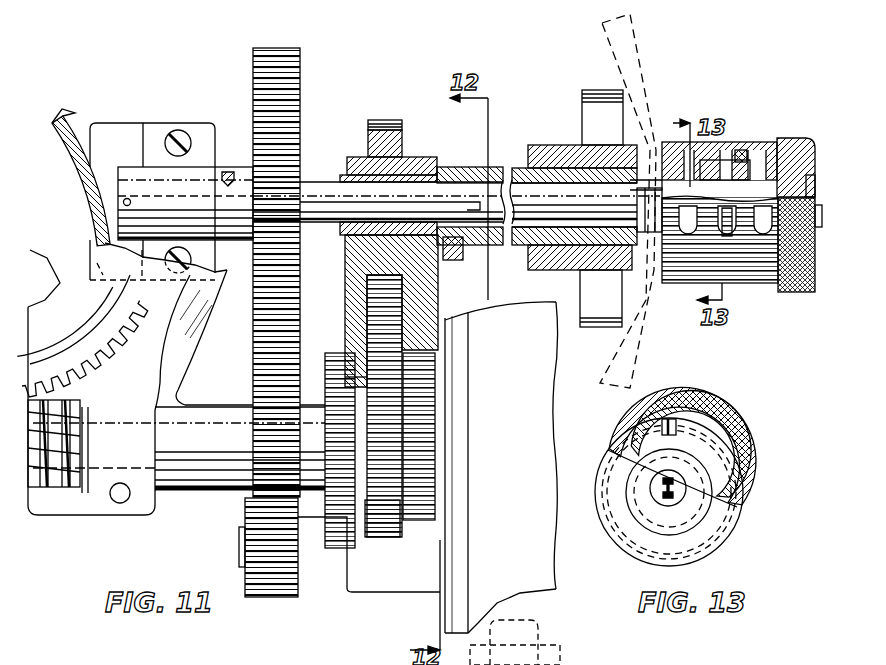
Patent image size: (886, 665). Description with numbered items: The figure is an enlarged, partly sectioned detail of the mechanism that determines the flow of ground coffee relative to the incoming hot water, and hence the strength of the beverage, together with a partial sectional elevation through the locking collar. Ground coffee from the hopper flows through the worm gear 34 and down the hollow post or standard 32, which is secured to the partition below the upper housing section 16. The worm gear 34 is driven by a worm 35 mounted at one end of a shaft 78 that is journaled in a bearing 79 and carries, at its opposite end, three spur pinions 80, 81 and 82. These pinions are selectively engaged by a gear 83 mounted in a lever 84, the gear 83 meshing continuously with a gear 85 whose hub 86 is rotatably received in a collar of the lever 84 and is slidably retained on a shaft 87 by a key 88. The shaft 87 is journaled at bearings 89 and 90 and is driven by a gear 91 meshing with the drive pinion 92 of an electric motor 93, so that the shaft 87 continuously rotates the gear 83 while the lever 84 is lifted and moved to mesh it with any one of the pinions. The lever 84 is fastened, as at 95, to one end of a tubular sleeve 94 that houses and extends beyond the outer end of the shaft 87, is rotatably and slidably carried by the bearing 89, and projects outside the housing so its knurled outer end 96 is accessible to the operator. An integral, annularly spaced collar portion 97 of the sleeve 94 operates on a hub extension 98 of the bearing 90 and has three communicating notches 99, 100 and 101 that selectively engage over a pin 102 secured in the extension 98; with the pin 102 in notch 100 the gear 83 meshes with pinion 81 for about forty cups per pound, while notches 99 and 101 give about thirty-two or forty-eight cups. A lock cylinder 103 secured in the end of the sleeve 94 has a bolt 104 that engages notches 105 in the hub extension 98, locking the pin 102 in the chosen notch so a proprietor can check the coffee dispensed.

In FIG. 11, the upper section of machine housing 16 is at (642, 58).
In FIG. 11, the hollow post or standard 32 is at (190, 346).
In FIG. 11, the worm gear 34 is at (102, 328).
In FIG. 11, the driving worm 35 is at (52, 500).
In FIG. 11, the shaft 78 is at (190, 420).
In FIG. 11, the bearing 79 is at (212, 492).
In FIG. 11, the spur pinion 80 is at (352, 546).
In FIG. 11, the spur pinion 81 is at (397, 538).
In FIG. 11, the spur pinion 82 is at (420, 522).
In FIG. 11, the gear 83 is at (385, 406).
In FIG. 11, the lever 84 is at (425, 296).
In FIG. 11, the gear 85 is at (404, 146).
In FIG. 11, the hub 86 is at (341, 177).
In FIG. 11, the shaft 87 is at (313, 193).
In FIG. 11, the key 88 is at (320, 208).
In FIG. 11, the bearing 89 is at (592, 126).
In FIG. 11, the bearing 90 is at (198, 130).
In FIG. 11, the gear 91 is at (300, 310).
In FIG. 11, the drive pinion 92 is at (280, 599).
In FIG. 11, the electric motor 93 is at (540, 557).
In FIG. 11, the tubular sleeve 94 is at (501, 168).
In FIG. 11, the fastening of lever to sleeve 95 is at (468, 262).
In FIG. 11, the knurled outer end 96 is at (792, 292).
In FIG. 11, the collar portion 97 is at (797, 138).
In FIG. 13, the collar portion 97 is at (741, 514).
In FIG. 11, the hub extension 98 is at (668, 142).
In FIG. 13, the hub extension 98 is at (711, 460).
In FIG. 11, the notch 99 is at (683, 282).
In FIG. 11, the notch 100 is at (731, 281).
In FIG. 11, the notch 101 is at (758, 282).
In FIG. 11, the pin 102 is at (722, 240).
In FIG. 13, the pin 102 is at (668, 420).
In FIG. 11, the cylinder 103 is at (810, 182).
In FIG. 13, the cylinder 103 is at (690, 513).
In FIG. 11, the bolt 104 is at (720, 166).
In FIG. 13, the bolt 104 is at (720, 484).
In FIG. 11, the notches 105 is at (742, 158).